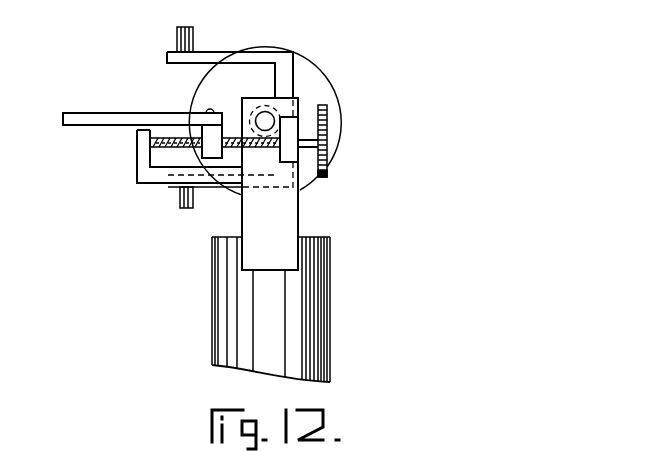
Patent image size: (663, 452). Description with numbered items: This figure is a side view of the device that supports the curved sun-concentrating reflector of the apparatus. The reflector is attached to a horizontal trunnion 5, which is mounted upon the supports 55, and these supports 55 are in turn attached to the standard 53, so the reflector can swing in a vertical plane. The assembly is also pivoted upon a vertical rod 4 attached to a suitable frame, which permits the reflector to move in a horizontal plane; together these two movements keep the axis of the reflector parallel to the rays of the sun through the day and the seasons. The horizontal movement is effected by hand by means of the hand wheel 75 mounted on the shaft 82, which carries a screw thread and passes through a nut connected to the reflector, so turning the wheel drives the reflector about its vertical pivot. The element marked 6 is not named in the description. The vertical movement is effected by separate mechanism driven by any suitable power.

The vertical rod 4 is at (194, 118).
The horizontal trunnion 5 is at (265, 113).
The disc 6 is at (307, 76).
The standard 53 is at (288, 309).
The supports 55 is at (270, 184).
The hand wheel 75 is at (324, 138).
The shaft 82 is at (155, 146).